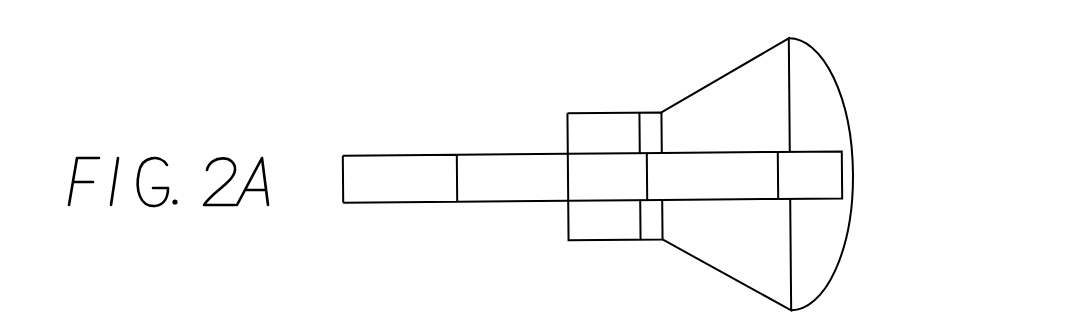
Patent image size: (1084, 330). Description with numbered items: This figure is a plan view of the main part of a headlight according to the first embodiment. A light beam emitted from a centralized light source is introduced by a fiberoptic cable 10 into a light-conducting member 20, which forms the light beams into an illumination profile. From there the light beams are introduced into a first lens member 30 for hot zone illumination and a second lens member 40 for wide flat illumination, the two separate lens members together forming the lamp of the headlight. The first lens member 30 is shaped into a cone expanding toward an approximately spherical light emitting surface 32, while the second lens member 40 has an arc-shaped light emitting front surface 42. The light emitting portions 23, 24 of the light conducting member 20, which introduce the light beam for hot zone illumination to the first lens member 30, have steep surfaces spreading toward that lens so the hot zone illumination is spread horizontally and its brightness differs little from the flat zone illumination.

The fiberoptic cable 10 is at (373, 183).
The light-conducting member 20 is at (477, 184).
The light emitting portion 23 is at (566, 200).
The light emitting portion 24 is at (567, 154).
The first lens member 30 is at (723, 248).
The light emitting surface 32 is at (817, 224).
The second lens member 40 is at (705, 174).
The light emitting front surface 42 is at (827, 165).